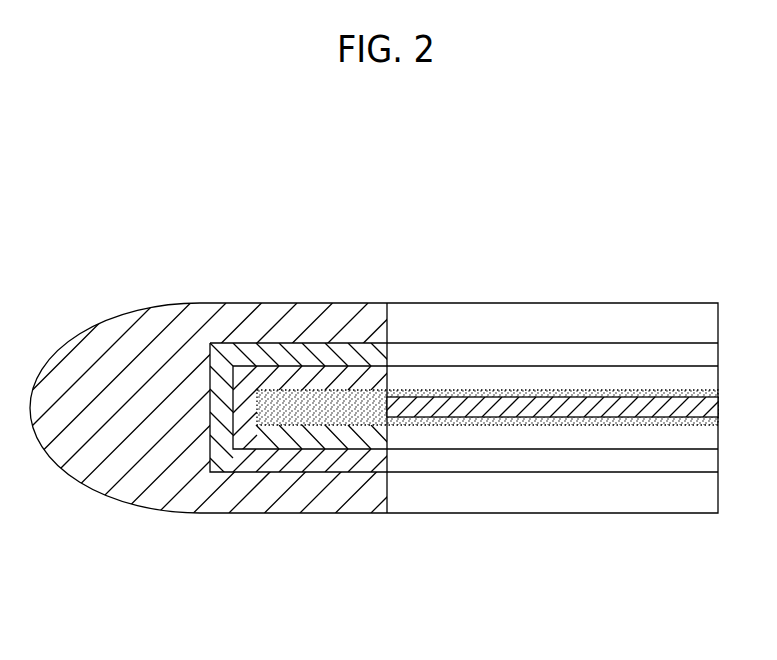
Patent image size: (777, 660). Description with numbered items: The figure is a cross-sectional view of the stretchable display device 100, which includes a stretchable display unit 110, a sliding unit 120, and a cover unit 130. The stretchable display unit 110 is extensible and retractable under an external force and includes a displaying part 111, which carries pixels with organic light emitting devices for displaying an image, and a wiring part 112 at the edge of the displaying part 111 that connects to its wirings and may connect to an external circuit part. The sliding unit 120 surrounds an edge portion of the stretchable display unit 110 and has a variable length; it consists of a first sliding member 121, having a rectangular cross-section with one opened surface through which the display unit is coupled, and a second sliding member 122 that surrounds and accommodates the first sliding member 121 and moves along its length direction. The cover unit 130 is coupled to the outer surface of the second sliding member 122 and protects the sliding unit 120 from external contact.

The stretchable display device 100 is at (129, 269).
The stretchable display unit 110 is at (533, 568).
The displaying part 111 is at (487, 413).
The wiring part 112 is at (335, 418).
The sliding unit 120 is at (392, 253).
The first sliding member 121 is at (353, 378).
The second sliding member 122 is at (305, 352).
The cover unit 130 is at (235, 320).